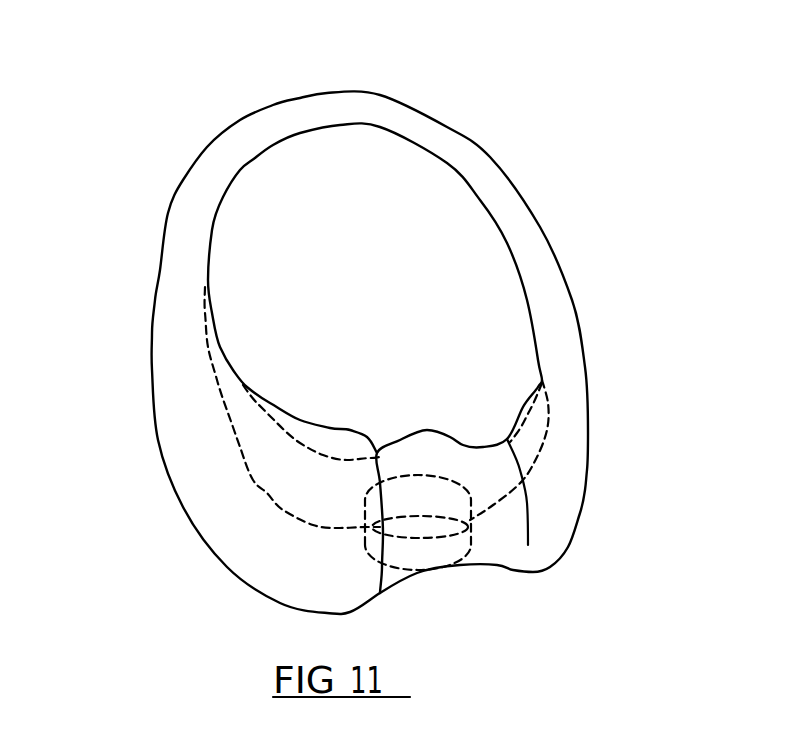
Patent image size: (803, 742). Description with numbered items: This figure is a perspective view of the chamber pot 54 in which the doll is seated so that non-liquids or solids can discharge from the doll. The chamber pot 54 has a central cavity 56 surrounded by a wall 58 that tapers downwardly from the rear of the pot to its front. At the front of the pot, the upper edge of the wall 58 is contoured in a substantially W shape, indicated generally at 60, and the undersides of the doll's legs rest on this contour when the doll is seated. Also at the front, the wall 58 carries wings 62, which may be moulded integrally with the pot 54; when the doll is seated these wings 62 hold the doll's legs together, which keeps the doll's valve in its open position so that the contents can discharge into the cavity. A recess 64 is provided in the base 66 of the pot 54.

The chamber pot 54 is at (503, 108).
The central cavity 56 is at (420, 270).
The wall 58 is at (170, 340).
The W-shaped upper edge contour 60 is at (447, 443).
The wings 62 is at (527, 412).
The recess 64 is at (457, 540).
The base 66 is at (393, 573).